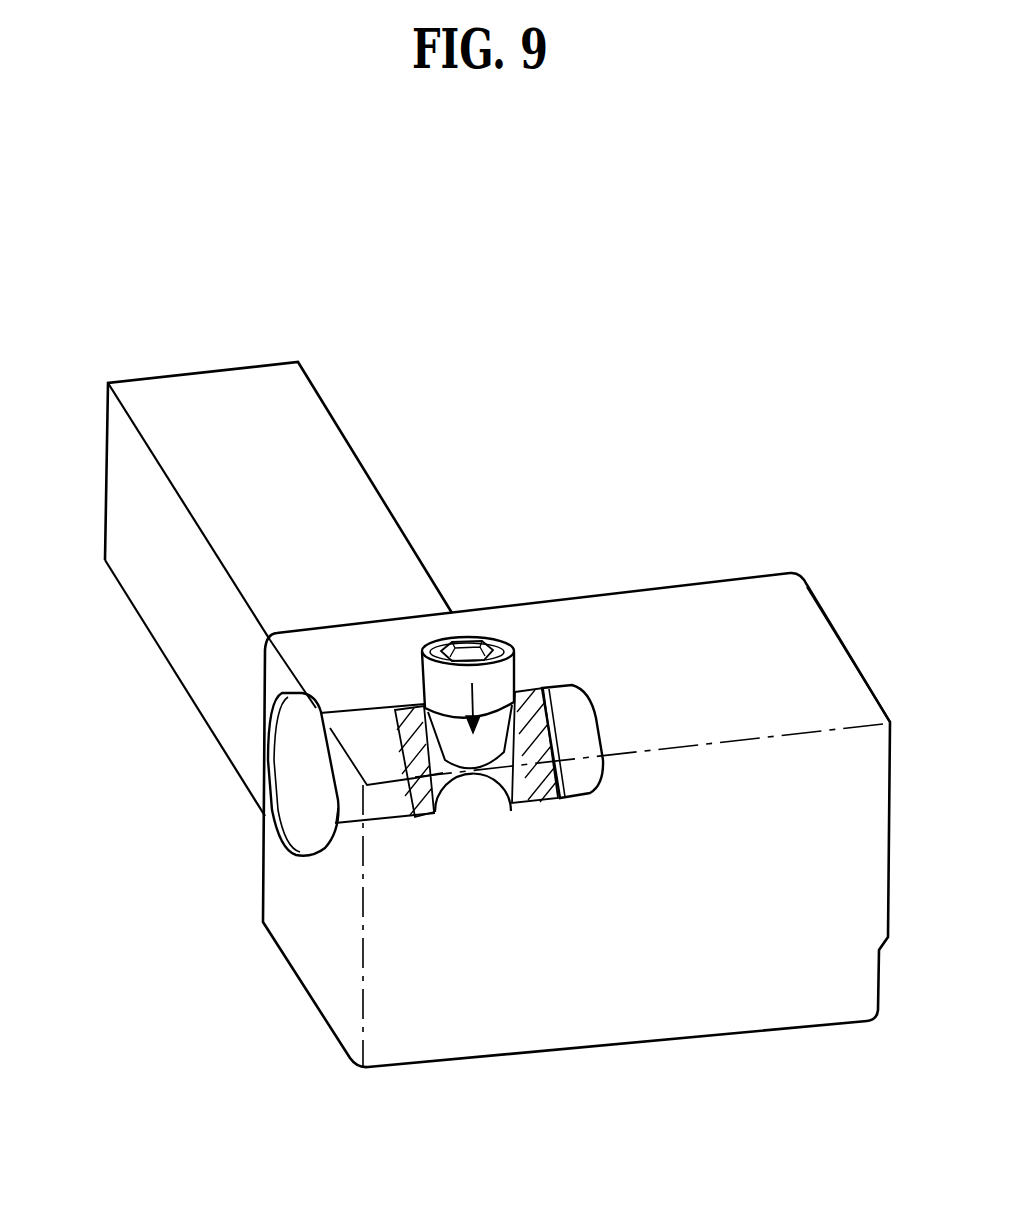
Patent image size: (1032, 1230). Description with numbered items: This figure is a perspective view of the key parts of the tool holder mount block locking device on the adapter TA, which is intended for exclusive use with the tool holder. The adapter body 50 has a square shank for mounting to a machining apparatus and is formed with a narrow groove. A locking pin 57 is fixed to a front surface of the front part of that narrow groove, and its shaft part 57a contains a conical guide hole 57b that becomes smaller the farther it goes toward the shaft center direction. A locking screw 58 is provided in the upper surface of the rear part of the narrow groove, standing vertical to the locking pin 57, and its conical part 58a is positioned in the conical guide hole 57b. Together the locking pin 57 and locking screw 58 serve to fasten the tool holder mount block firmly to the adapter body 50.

The adapter TA is at (528, 436).
The adapter body 50 is at (146, 577).
The locking pin 57 is at (287, 793).
The shaft part 57a is at (389, 810).
The conical guide hole 57b is at (522, 773).
The locking screw 58 is at (510, 689).
The conical part 58a is at (470, 762).